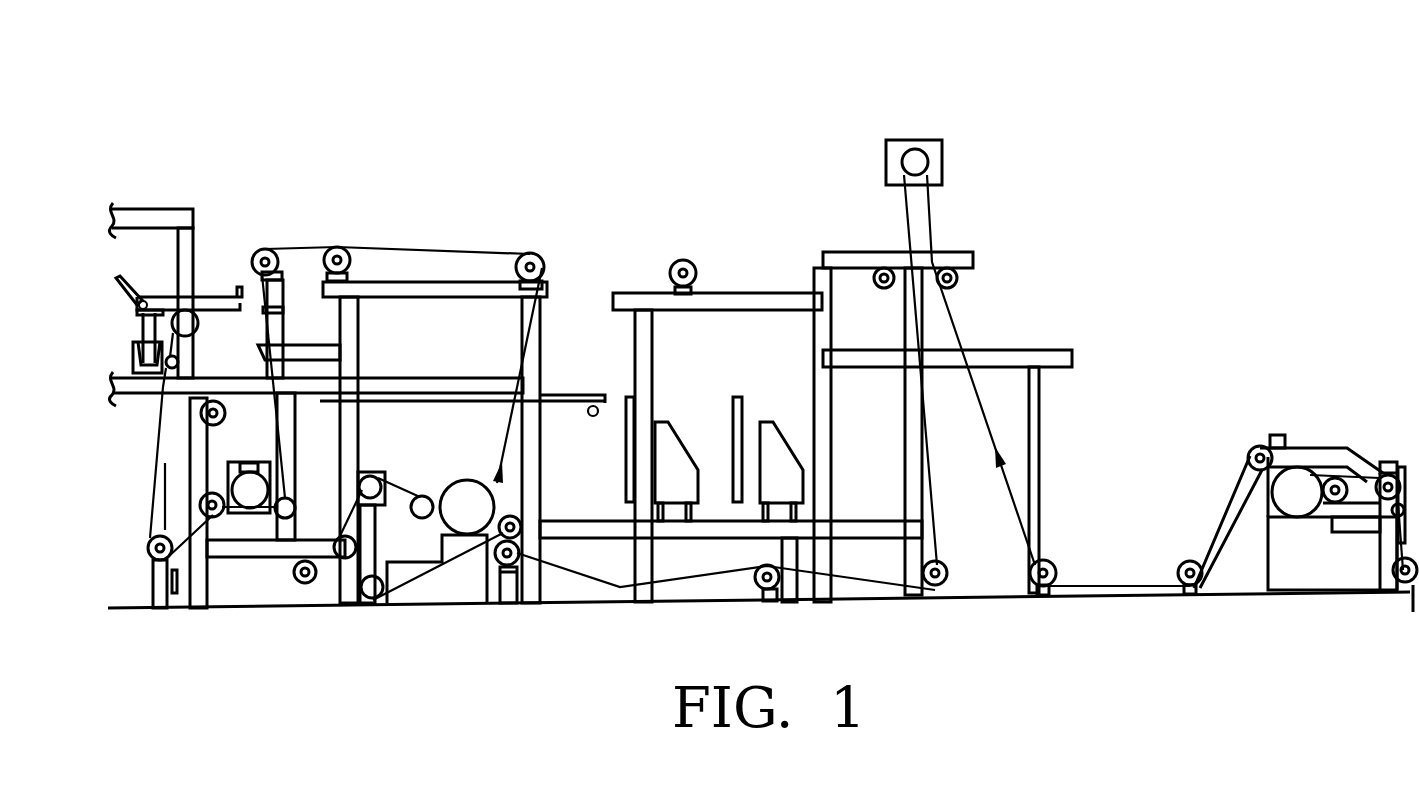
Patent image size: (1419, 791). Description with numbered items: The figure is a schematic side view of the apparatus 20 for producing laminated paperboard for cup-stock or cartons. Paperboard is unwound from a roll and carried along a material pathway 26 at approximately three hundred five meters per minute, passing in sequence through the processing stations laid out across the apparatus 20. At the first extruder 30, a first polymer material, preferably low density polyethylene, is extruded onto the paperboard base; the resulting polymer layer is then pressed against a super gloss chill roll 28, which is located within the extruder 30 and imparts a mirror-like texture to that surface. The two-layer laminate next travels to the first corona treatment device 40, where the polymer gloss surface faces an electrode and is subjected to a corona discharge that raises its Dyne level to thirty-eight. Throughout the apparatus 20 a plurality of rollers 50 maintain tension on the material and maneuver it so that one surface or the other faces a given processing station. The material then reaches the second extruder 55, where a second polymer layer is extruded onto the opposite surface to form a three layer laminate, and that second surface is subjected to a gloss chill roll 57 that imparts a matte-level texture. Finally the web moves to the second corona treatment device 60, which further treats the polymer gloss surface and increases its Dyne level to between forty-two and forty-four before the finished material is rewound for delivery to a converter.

The apparatus 20 is at (1035, 142).
The material pathway 26 is at (1237, 467).
The super gloss chill roll 28 is at (1310, 497).
The first extruder 30 is at (1315, 440).
The first corona treatment device 40 is at (932, 140).
The rollers 50 is at (758, 366).
The second extruder 55 is at (465, 508).
The gloss chill roll 57 is at (458, 498).
The second corona treatment device 60 is at (248, 472).